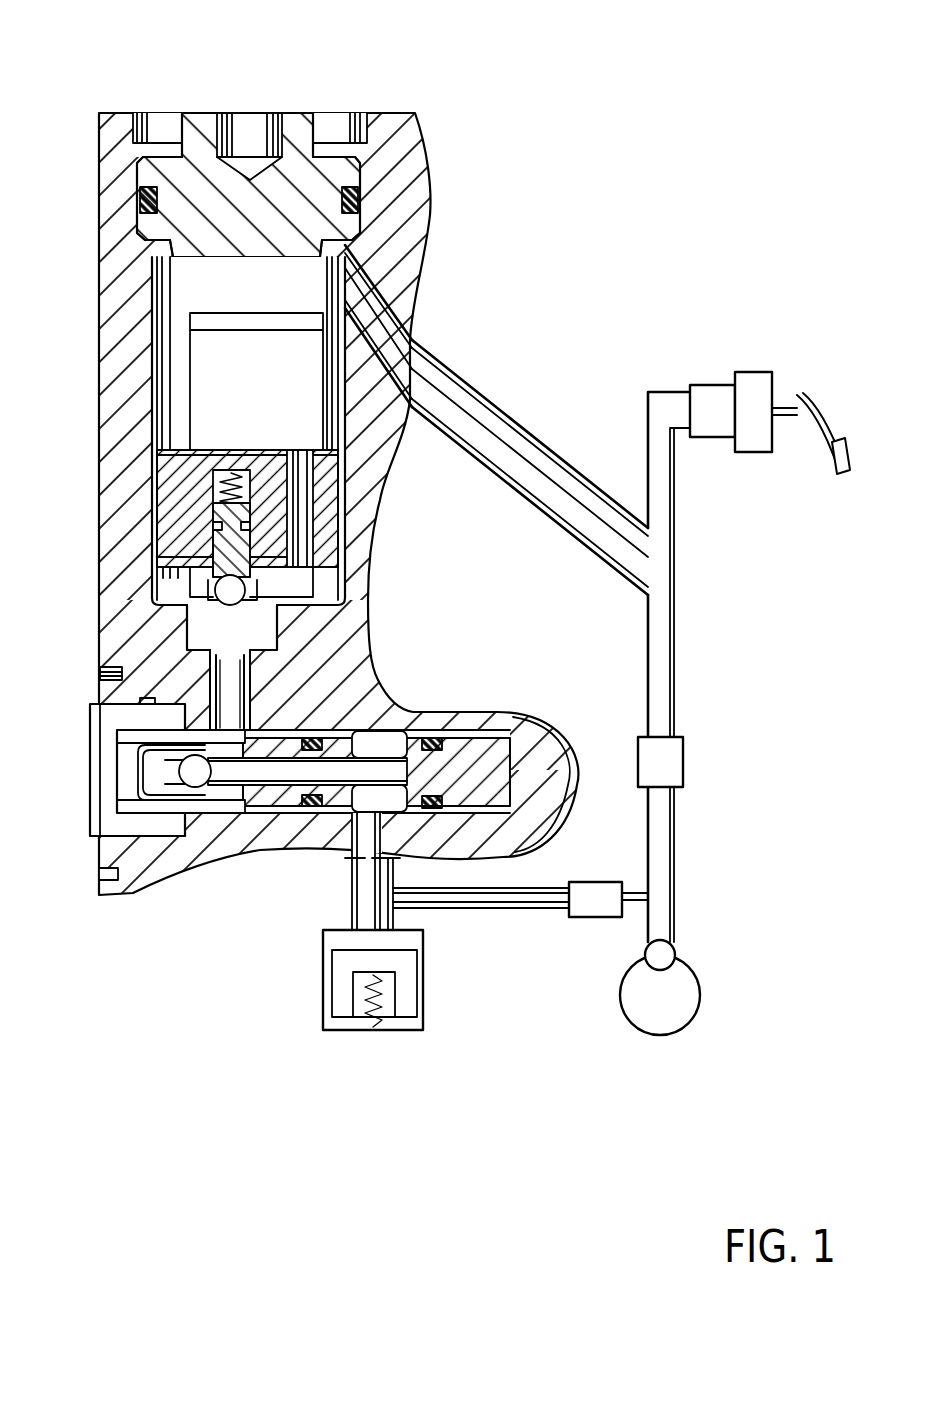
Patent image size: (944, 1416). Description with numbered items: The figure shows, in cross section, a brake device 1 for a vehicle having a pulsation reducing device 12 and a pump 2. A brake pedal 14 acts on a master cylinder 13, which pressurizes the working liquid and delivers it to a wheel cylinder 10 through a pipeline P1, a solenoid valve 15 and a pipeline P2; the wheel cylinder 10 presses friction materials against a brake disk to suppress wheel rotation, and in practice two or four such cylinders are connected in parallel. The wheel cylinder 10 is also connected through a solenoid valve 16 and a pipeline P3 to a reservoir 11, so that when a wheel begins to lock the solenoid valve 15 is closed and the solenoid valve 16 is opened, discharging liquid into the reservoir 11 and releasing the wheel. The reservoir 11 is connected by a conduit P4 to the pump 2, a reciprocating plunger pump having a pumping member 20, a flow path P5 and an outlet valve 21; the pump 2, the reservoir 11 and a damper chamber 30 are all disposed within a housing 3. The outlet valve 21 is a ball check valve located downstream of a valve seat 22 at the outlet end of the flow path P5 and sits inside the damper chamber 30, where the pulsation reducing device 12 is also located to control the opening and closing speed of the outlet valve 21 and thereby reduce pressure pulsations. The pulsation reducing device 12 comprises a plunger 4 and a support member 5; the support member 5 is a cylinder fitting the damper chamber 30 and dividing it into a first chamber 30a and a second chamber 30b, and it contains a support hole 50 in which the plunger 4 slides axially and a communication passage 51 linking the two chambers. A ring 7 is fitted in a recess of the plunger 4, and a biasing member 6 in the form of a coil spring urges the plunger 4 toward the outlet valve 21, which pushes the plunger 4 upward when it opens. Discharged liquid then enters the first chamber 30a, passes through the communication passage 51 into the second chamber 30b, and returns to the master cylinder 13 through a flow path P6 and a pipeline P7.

The brake device 1 is at (136, 95).
The pump 2 is at (277, 832).
The housing 3 is at (150, 865).
The plunger 4 is at (200, 577).
The support member 5 is at (200, 527).
The biasing member 6 is at (200, 487).
The ring 7 is at (200, 453).
The wheel cylinder 10 is at (672, 955).
The reservoir 11 is at (423, 990).
The pulsation reducing device 12 is at (62, 392).
The master cylinder 13 is at (709, 383).
The brake pedal 14 is at (813, 403).
The solenoid valve 15 is at (683, 762).
The solenoid valve 16 is at (592, 917).
The pumping member 20 is at (250, 815).
The outlet valve 21 is at (200, 647).
The valve seat 22 is at (200, 610).
The damper chamber 30 is at (338, 338).
The first chamber 30a is at (240, 605).
The second chamber 30b is at (182, 300).
The support hole 50 is at (305, 560).
The communication passage 51 is at (300, 512).
The pipeline P1 is at (665, 502).
The pipeline P2 is at (667, 865).
The pipeline P3 is at (510, 908).
The conduit P4 is at (348, 860).
The flow path P5 is at (227, 703).
The flow path P6 is at (347, 283).
The pipeline P7 is at (537, 446).